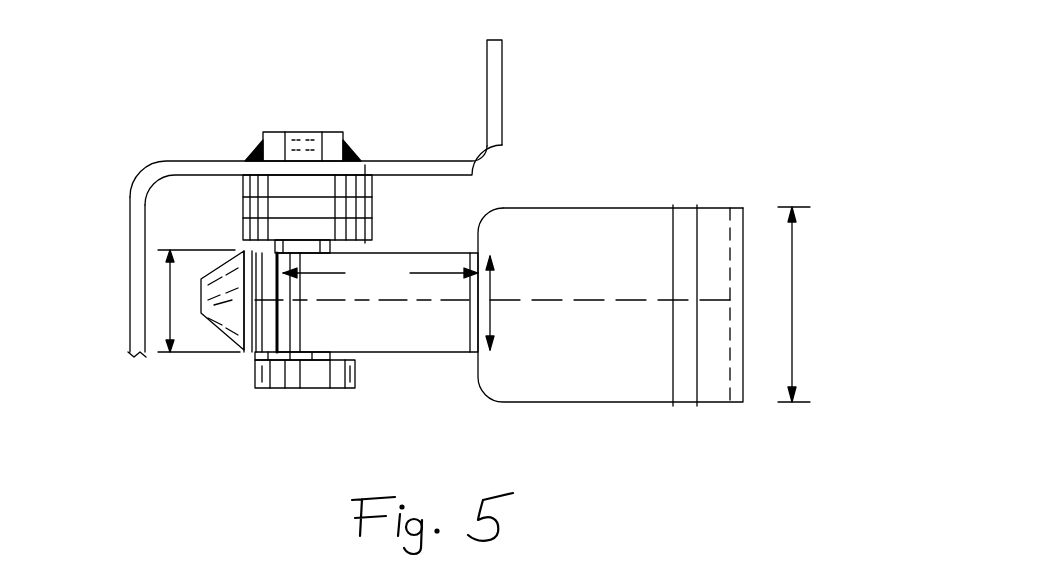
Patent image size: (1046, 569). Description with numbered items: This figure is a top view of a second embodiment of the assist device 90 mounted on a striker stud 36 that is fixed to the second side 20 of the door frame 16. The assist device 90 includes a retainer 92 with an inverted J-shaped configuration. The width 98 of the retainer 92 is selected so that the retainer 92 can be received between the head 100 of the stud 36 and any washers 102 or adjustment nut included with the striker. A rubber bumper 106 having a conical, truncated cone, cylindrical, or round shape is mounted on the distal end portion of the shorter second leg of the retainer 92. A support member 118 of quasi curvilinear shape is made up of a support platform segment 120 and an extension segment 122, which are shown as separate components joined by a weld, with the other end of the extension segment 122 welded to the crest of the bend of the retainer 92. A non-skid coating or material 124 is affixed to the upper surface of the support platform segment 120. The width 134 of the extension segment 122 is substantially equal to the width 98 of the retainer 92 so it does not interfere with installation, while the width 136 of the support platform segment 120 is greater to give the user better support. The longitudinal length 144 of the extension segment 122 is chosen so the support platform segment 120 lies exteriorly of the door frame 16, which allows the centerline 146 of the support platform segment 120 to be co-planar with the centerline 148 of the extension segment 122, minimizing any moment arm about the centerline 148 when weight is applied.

The door frame 16 is at (503, 80).
The second side 20 is at (199, 161).
The stud 36 is at (246, 386).
The assist device 90 is at (676, 446).
The retainer 92 is at (255, 352).
The width of the retainer 98 is at (155, 298).
The head of the stud 100 is at (355, 383).
The washers 102 is at (372, 190).
The bumper 106 is at (226, 280).
The support member 118 is at (720, 158).
The support platform segment 120 is at (534, 403).
The extension segment 122 is at (415, 352).
The non-skid coating or material 124 is at (580, 250).
The width of the extension segment 134 is at (493, 328).
The width of the support platform segment 136 is at (792, 272).
The longitudinal length of the extension segment 144 is at (380, 276).
The centerline of the support platform segment 146 is at (622, 310).
The centerline of the extension segment 148 is at (430, 305).